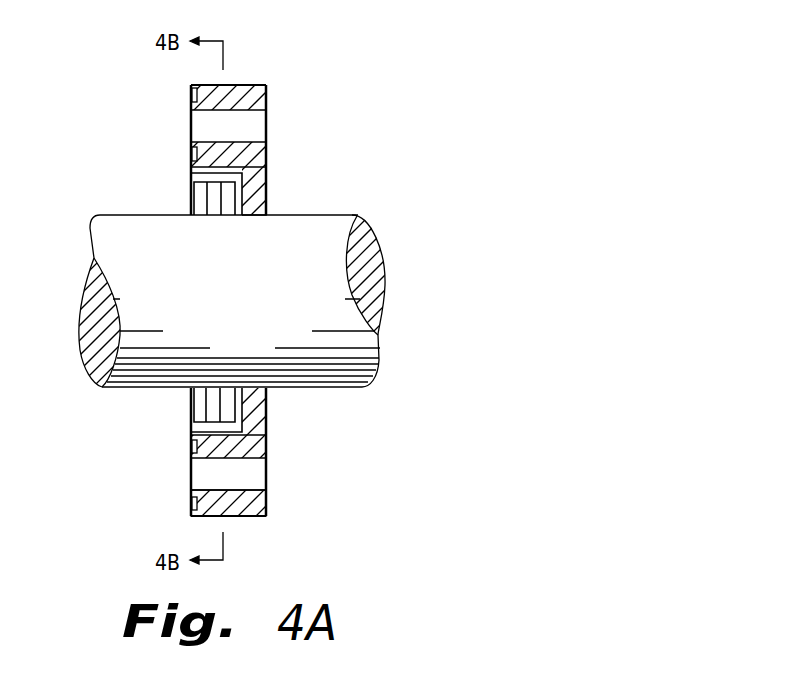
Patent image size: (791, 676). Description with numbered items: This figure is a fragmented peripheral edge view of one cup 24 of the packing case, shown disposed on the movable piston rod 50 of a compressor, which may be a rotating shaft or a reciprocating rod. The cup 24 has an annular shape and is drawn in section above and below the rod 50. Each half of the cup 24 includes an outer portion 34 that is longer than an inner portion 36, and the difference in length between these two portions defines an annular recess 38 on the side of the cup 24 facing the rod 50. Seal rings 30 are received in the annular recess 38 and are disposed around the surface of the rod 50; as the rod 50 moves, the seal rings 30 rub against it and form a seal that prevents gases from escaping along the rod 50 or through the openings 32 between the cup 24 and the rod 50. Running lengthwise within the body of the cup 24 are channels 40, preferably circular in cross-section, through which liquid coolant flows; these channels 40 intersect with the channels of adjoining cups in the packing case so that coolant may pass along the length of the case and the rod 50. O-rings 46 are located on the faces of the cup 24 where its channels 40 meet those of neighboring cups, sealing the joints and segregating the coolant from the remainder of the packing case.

The cup 24 is at (342, 64).
The seal rings 30 is at (193, 193).
The openings 32 is at (268, 212).
The outer portion 34 is at (243, 505).
The inner portion 36 is at (245, 410).
The annular recess 38 is at (238, 175).
The channels 40 is at (250, 125).
The o-rings 46 is at (190, 155).
The piston rod 50 is at (372, 258).